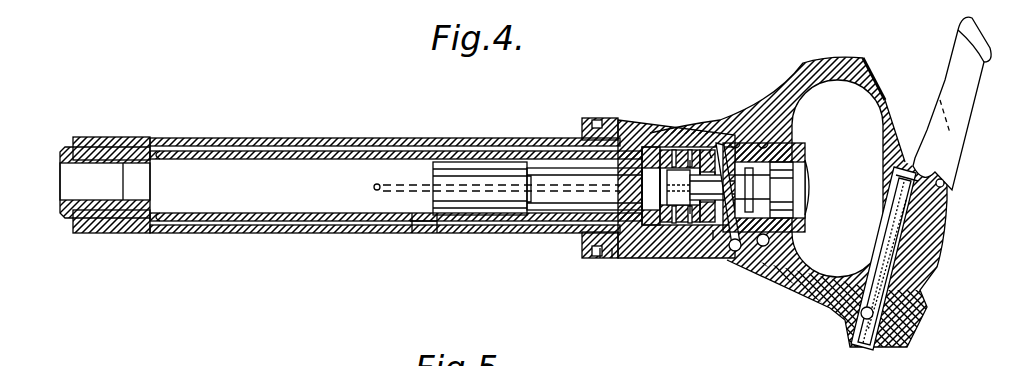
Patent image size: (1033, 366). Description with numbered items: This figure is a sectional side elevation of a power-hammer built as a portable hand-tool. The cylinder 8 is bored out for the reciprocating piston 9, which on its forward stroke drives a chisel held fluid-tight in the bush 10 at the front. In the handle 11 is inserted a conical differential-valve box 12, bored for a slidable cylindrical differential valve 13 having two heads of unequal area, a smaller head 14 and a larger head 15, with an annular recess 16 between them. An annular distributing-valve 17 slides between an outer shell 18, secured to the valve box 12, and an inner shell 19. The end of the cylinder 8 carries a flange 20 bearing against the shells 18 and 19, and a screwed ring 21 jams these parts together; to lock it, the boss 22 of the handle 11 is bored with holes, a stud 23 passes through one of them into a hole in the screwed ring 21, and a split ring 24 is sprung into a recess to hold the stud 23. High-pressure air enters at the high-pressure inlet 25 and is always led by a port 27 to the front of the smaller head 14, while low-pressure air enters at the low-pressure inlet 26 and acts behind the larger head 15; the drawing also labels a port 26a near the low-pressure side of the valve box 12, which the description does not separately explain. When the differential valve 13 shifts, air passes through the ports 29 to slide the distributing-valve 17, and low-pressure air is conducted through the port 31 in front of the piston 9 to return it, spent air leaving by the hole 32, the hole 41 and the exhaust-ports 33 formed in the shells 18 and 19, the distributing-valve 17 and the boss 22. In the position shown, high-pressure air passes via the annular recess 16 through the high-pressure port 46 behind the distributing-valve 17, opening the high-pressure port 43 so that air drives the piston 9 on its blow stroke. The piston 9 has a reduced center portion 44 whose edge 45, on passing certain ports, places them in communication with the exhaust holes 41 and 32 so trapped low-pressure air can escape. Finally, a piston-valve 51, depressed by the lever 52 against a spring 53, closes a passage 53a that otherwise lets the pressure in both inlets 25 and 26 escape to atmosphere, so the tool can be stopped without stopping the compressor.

The cylinder 8 is at (232, 138).
The piston 9 is at (476, 170).
The bush 10 is at (128, 148).
The handle 11 is at (829, 60).
The differential-valve box 12 is at (782, 148).
The differential valve 13 is at (740, 150).
The smaller head 14 is at (712, 240).
The larger head 15 is at (780, 180).
The annular recess 16 is at (800, 190).
The annular distributing-valve 17 is at (643, 160).
The outer shell 18 is at (695, 150).
The shell 19 is at (690, 230).
The flange 20 is at (622, 248).
The screwed ring 21 is at (600, 258).
The boss 22 is at (622, 112).
The stud 23 is at (612, 260).
The split ring 24 is at (598, 109).
The high-pressure inlet 25 is at (738, 262).
The low-pressure inlet 26 is at (770, 241).
The port 26a is at (765, 140).
The port 27 is at (713, 240).
The ports 29 is at (403, 200).
The port 31 is at (338, 150).
The hole 32 is at (440, 233).
The exhaust-ports 33 is at (668, 140).
The hole 41 is at (412, 233).
The high-pressure port 43 is at (712, 150).
The reduced center portion 44 is at (552, 205).
The edge 45 is at (530, 200).
The high-pressure port 46 is at (728, 150).
The piston-valve 51 is at (890, 275).
The lever 52 is at (958, 116).
The spring 53 is at (905, 222).
The passage 53a is at (875, 312).